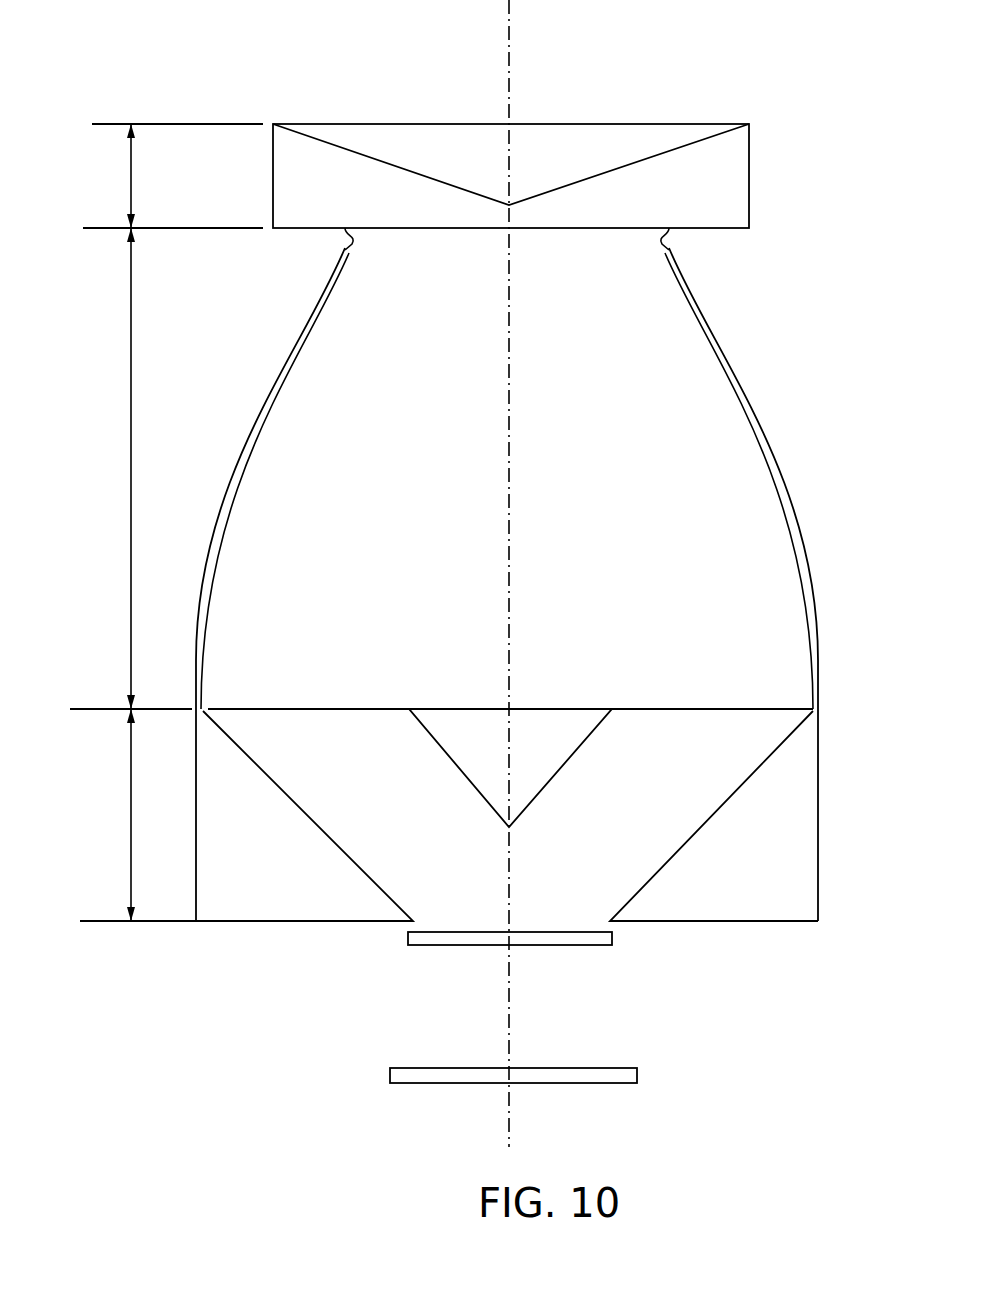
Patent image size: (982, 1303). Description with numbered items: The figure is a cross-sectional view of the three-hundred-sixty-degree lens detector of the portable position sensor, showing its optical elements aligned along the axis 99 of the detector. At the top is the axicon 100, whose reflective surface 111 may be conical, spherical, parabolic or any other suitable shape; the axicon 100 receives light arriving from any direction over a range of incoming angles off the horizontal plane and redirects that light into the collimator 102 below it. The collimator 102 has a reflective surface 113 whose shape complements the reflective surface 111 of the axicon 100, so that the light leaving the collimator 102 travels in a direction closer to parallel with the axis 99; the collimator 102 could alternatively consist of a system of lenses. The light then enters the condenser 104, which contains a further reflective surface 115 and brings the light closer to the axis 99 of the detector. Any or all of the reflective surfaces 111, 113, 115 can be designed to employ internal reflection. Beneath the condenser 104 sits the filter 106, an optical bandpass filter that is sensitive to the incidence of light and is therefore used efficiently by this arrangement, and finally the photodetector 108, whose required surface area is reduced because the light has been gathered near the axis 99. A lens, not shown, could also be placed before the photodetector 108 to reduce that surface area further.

The axis 99 is at (510, 34).
The axicon 100 is at (131, 196).
The collimator 102 is at (131, 468).
The condenser 104 is at (131, 852).
The filter 106 is at (612, 940).
The photodetector 108 is at (390, 1075).
The reflective surface of the axicon 111 is at (677, 150).
The reflective surface of the collimator 113 is at (776, 437).
The reflective surface 115 is at (697, 835).